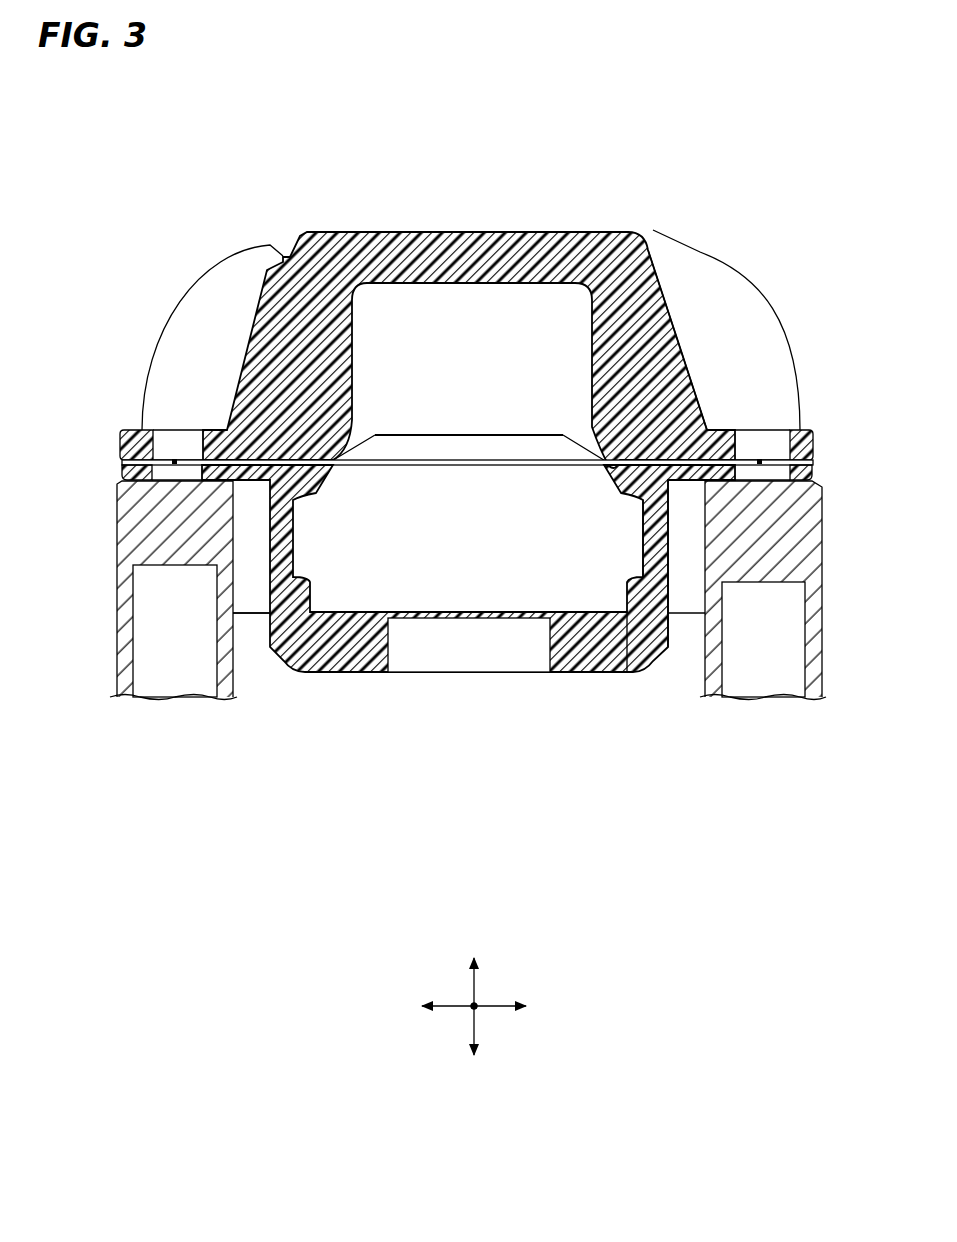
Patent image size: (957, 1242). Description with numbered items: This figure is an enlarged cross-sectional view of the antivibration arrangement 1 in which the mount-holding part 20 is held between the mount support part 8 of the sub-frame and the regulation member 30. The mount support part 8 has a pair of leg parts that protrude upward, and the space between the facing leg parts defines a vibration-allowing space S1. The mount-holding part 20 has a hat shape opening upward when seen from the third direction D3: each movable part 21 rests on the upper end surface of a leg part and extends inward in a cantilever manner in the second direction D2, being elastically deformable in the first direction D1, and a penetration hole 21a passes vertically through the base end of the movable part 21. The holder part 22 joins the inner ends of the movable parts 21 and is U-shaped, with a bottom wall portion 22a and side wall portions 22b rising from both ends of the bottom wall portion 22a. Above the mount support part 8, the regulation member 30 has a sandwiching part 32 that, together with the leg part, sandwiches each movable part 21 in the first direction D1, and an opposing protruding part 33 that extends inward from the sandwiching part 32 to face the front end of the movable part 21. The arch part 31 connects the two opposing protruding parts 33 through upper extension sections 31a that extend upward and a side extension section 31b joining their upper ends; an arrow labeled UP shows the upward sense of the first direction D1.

The valve device 1 is at (777, 124).
The mount support part 8 is at (805, 556).
The mount-holding part 20 is at (346, 676).
The movable part 21 is at (212, 478).
The penetration hole 21a is at (168, 472).
The holder part 22 is at (702, 785).
The bottom wall portion 22a is at (580, 650).
The side wall portion 22b is at (662, 565).
The regulation member 30 is at (772, 285).
The arch part 31 is at (675, 108).
The upper extension section 31a is at (677, 332).
The side extension section 31b is at (483, 238).
The sandwiching part 32 is at (137, 443).
The opposing protruding part 33 is at (318, 447).
The vibration-allowing space S1 is at (272, 674).
The first direction D1 is at (476, 982).
The second direction D2 is at (455, 1004).
The third direction D3 is at (476, 1008).